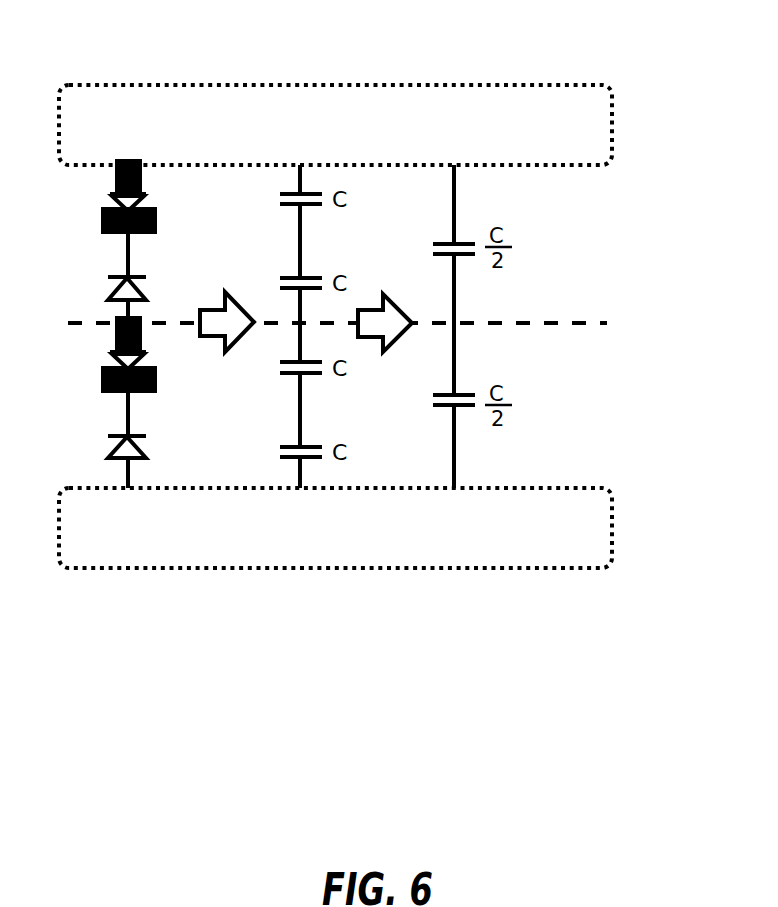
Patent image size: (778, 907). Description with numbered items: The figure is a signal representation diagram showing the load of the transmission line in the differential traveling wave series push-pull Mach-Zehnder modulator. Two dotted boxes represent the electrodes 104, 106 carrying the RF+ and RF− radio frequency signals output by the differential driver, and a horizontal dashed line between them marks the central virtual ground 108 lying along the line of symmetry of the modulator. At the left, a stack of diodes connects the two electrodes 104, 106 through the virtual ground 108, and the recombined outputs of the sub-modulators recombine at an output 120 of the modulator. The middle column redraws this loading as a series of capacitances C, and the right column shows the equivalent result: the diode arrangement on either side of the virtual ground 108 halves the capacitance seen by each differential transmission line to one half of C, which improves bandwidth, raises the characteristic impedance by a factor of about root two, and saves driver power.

The electrode (RF+) 104 is at (520, 86).
The electrode (RF−) 106 is at (565, 568).
The virtual ground 108 is at (605, 327).
The output 120 is at (112, 367).